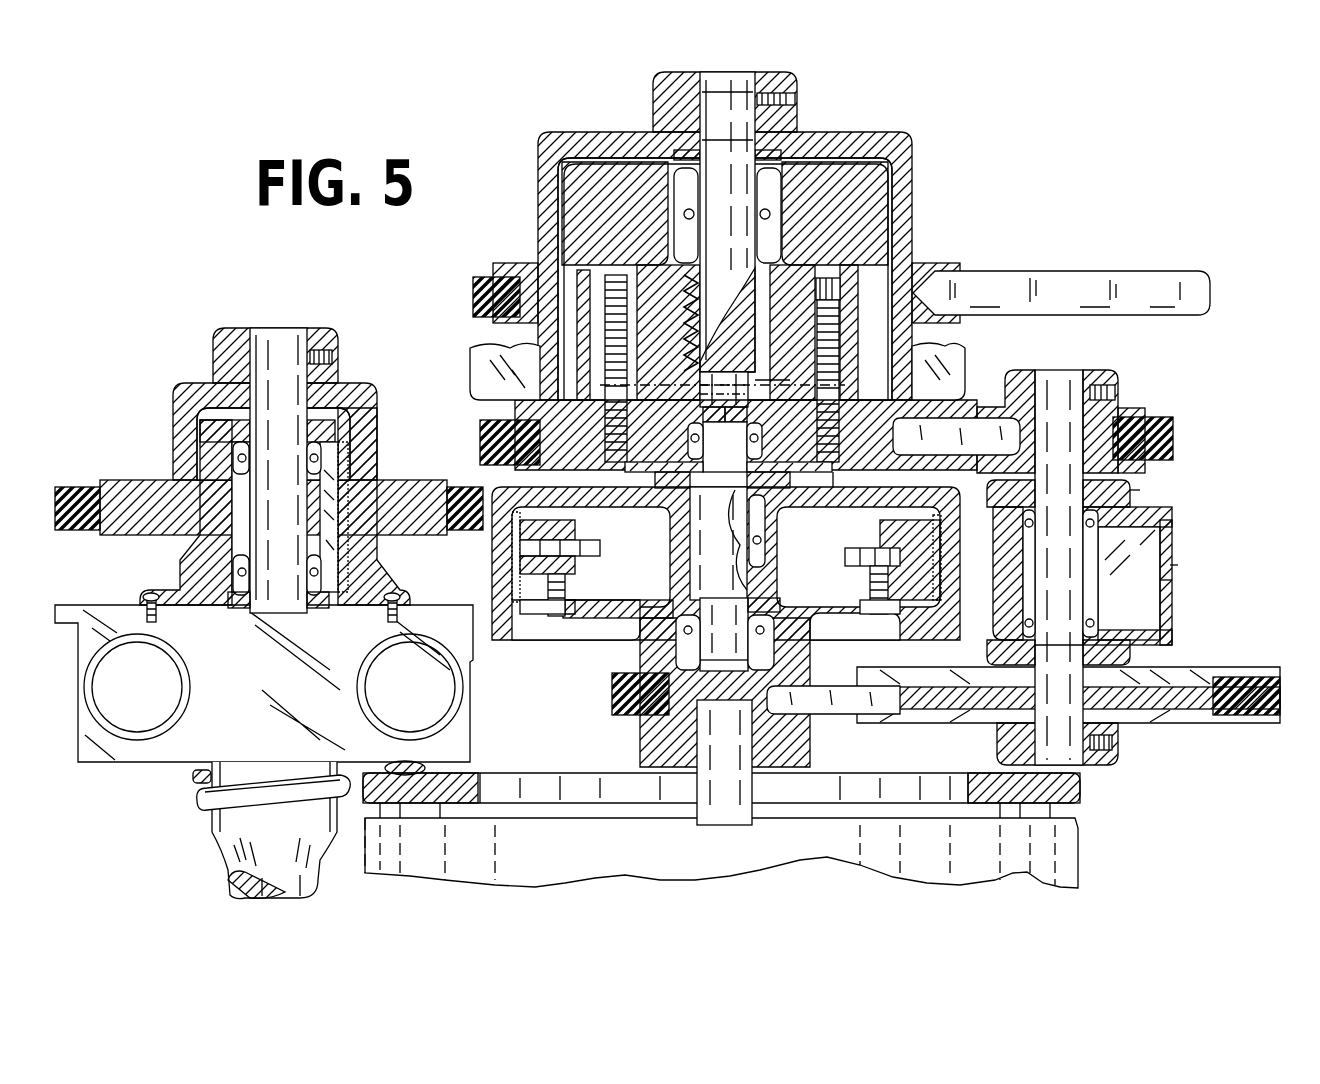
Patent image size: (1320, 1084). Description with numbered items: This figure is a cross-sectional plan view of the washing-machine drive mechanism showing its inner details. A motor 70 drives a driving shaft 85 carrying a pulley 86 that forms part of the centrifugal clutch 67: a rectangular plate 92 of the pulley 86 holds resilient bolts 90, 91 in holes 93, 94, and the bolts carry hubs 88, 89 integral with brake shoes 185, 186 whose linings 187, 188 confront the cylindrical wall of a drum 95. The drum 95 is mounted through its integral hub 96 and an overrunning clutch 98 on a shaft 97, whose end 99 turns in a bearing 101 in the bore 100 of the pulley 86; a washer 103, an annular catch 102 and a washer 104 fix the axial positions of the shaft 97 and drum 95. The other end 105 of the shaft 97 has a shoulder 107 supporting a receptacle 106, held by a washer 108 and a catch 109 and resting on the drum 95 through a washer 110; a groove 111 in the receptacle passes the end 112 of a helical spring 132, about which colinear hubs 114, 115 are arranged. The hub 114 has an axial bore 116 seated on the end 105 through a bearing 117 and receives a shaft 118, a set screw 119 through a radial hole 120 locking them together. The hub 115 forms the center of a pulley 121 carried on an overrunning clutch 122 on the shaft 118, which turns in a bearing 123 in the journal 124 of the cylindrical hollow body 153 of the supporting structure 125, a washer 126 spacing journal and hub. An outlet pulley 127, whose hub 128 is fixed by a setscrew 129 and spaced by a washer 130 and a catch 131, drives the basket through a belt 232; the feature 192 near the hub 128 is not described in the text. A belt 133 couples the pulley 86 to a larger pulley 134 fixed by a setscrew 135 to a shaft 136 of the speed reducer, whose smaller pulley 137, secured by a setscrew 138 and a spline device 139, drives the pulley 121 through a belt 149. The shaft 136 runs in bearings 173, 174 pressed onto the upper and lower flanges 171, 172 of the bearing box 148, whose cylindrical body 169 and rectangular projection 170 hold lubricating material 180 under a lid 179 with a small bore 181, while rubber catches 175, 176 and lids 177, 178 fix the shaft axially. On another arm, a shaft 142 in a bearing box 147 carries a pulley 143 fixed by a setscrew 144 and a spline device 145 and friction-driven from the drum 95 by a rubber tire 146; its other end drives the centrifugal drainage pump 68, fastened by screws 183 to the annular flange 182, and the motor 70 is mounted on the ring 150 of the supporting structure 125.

The centrifugal clutch 67 is at (238, 822).
The centrifugal pump 68 is at (280, 672).
The motor 70 is at (653, 857).
The driving shaft 85 is at (731, 757).
The pulley 86 is at (810, 740).
The hub 88 is at (565, 572).
The hub 89 is at (870, 572).
The resilient bolt 90 is at (562, 606).
The resilient bolt 91 is at (882, 606).
The rectangular plate 92 is at (532, 606).
The hole 93 is at (572, 604).
The hole 94 is at (886, 612).
The drum 95 is at (494, 586).
The integral hub 96 is at (767, 528).
The shaft 97 is at (737, 505).
The overrunning clutch 98 is at (766, 543).
The end of shaft 99 is at (724, 658).
The bore 100 is at (750, 662).
The bearing 101 is at (765, 623).
The annular catch 102 is at (724, 629).
The washer 103 is at (690, 610).
The washer 104 is at (670, 614).
The end of shaft 105 is at (744, 449).
The receptacle 106 is at (820, 473).
The shoulder 107 is at (690, 490).
The plate 108 is at (663, 448).
The catch 109 is at (764, 448).
The washer 110 is at (765, 486).
The groove 111 is at (846, 268).
The end of helical spring 112 is at (820, 300).
The hub 114 is at (799, 422).
The hub 115 is at (679, 314).
The axial bore 116 is at (704, 412).
The bearing 117 is at (762, 430).
The shaft 118 is at (746, 244).
The axis 119 is at (757, 380).
The radial hole 120 is at (655, 394).
The pulley 121 is at (627, 249).
The overrunning clutch 122 is at (680, 350).
The bearing 123 is at (690, 192).
The journal 124 is at (782, 228).
The supporting structure 125 is at (490, 380).
The washer 126 is at (658, 266).
The outlet pulley 127 is at (912, 135).
The hub 128 is at (800, 80).
The setscrew 129 is at (800, 100).
The washer 130 is at (678, 160).
The catch 131 is at (692, 150).
The helical spring 132 is at (818, 370).
The belt 133 is at (818, 695).
The pulley 134 is at (1140, 735).
The setscrew 135 is at (1112, 746).
The shaft 136 is at (1074, 690).
The pulley 137 is at (1122, 410).
The setscrew 138 is at (1112, 396).
The spline device 139 is at (1086, 370).
The shaft 142 is at (289, 495).
The pulley 143 is at (350, 386).
The setscrew 144 is at (333, 357).
The spline device 145 is at (300, 328).
The rubber tire 146 is at (72, 486).
The bearing box 147 is at (205, 549).
The bearing box 148 is at (1190, 569).
The belt 149 is at (955, 420).
The ring 150 is at (840, 791).
The cylindrical hollow body 153 is at (885, 195).
The cylindrical body 169 is at (1000, 590).
The rectangular projection 170 is at (1150, 516).
The inner upper flange 171 is at (1125, 496).
The inner lower flange 172 is at (1173, 636).
The bearing 173 is at (1095, 544).
The bearing 174 is at (1095, 620).
The rubber catch 175 is at (1133, 478).
The rubber catch 176 is at (1040, 650).
The lid 177 is at (986, 496).
The lid 178 is at (1131, 651).
The lid 179 is at (1173, 585).
The lubricating material 180 is at (1149, 582).
The small central bore 181 is at (1173, 578).
The annular flange 182 is at (405, 592).
The screws 183 is at (160, 612).
The shoe 185 is at (595, 550).
The shoe 186 is at (842, 556).
The brake lining 187 is at (545, 540).
The brake lining 188 is at (940, 538).
The bore 192 is at (760, 103).
The belt 232 is at (1035, 290).